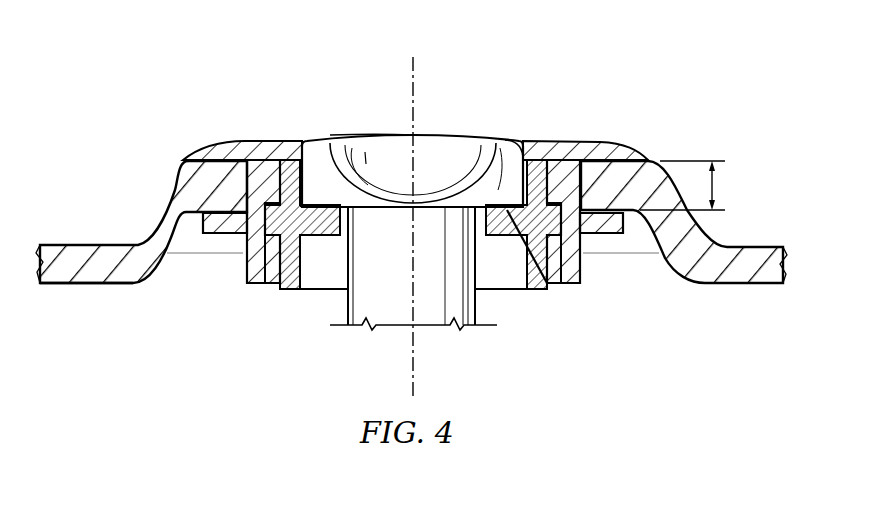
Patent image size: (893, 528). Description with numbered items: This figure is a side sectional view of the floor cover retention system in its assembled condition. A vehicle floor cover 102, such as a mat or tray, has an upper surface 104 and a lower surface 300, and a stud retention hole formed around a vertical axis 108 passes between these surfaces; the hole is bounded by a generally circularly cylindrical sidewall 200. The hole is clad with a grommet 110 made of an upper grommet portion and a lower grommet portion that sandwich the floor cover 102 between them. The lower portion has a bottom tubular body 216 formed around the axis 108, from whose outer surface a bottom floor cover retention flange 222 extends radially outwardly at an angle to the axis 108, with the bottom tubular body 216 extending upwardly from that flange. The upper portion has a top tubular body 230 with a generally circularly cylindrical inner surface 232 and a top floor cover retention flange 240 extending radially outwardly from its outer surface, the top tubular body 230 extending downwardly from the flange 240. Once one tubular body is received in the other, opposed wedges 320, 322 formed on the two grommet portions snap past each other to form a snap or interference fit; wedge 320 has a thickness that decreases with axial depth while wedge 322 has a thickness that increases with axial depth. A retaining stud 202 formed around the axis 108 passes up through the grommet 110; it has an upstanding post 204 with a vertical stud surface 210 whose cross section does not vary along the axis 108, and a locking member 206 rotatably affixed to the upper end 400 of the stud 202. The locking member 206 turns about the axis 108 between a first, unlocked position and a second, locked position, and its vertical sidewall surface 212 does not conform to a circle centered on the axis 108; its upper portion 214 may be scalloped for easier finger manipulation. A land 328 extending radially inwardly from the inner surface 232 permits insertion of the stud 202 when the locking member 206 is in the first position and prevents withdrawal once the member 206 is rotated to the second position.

The grommet 110 is at (143, 50).
The vertical axis 108 is at (407, 78).
The vehicle floor cover 102 is at (78, 243).
The upper surface 104 is at (748, 246).
The lower surface 300 is at (72, 283).
The generally circularly cylindrical sidewall 200 is at (215, 158).
The top floor cover retention flange 240 is at (238, 152).
The bottom tubular body 216 is at (258, 284).
The bottom floor cover retention flange 222 is at (218, 236).
The top tubular body 230 is at (290, 270).
The inner surface 232 is at (292, 154).
The wedge 322 is at (560, 200).
The wedge 320 is at (553, 218).
The land 328 is at (342, 203).
The retaining stud 202 is at (422, 227).
The locking member 206 is at (384, 140).
The upper portion 214 is at (431, 145).
The vertical sidewall surface 212 is at (513, 150).
The upper end 400 is at (455, 168).
The vertical stud surface 210 is at (428, 310).
The upstanding post 204 is at (478, 303).